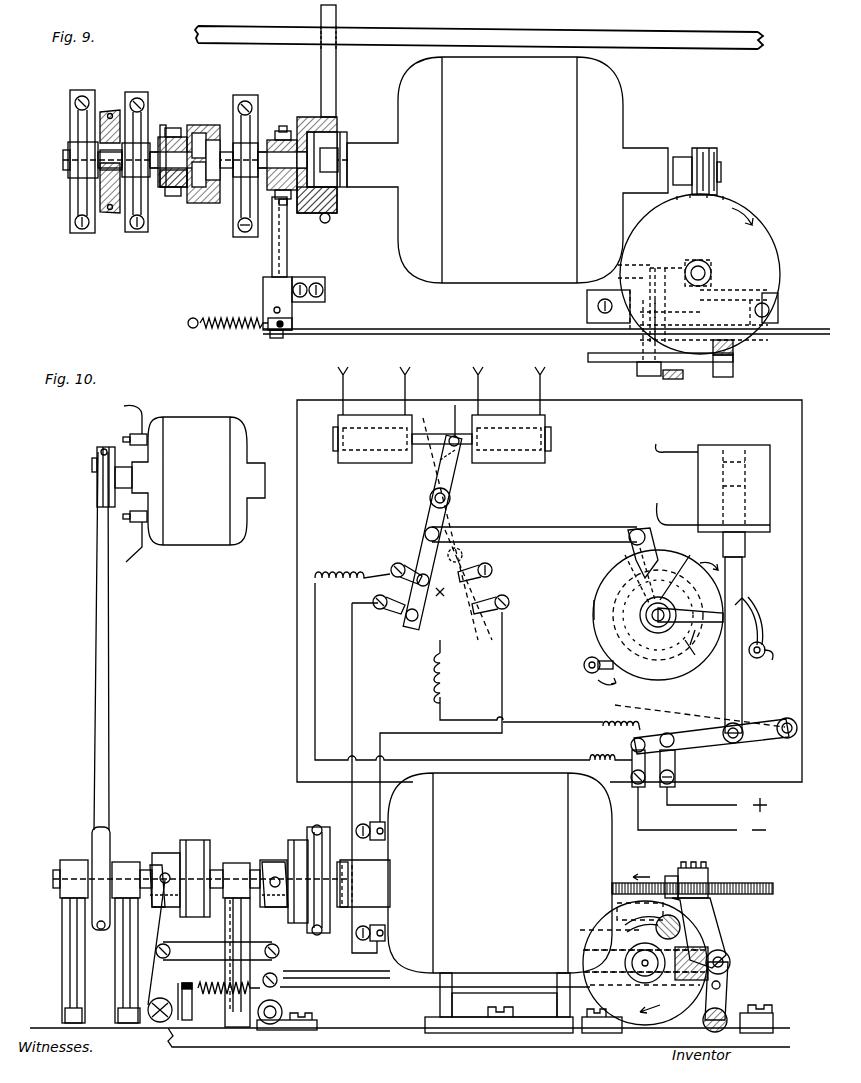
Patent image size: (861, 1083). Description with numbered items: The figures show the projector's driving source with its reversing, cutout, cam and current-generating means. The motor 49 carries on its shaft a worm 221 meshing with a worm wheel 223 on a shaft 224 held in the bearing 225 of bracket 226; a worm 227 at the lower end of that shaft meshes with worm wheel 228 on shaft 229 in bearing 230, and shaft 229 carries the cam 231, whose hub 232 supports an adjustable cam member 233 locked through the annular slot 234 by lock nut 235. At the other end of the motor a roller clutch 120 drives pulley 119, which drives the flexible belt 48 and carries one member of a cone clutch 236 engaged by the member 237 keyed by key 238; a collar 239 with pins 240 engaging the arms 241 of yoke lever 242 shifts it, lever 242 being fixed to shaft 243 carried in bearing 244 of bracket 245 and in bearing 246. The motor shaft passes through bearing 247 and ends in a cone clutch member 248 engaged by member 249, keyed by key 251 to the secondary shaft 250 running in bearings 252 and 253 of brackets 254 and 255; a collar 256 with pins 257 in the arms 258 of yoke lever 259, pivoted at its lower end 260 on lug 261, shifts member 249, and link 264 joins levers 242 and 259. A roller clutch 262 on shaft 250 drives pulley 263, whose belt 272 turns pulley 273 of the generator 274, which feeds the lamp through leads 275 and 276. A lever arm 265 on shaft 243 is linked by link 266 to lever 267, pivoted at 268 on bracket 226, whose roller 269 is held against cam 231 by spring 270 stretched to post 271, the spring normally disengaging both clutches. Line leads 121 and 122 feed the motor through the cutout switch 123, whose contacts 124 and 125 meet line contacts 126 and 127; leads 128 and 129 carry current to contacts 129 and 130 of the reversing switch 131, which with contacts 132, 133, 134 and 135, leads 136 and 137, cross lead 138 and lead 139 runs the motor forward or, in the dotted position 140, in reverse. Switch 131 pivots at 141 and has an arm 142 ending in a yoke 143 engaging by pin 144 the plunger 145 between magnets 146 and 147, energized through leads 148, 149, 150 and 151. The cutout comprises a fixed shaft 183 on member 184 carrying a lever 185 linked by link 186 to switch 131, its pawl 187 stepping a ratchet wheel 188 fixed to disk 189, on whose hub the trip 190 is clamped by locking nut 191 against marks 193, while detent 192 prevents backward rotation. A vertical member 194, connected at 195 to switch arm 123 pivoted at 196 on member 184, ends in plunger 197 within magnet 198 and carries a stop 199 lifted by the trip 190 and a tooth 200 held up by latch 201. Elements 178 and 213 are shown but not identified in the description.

In FIG. 9, the flexible belt 48 is at (324, 72).
In FIG. 10, the flexible belt 48 is at (318, 827).
In FIG. 9, the motor 49 is at (600, 100).
In FIG. 10, the motor 49 is at (460, 953).
In FIG. 9, the pulley 119 is at (340, 214).
In FIG. 10, the pulley 119 is at (312, 828).
In FIG. 9, the roller clutch 120 is at (326, 165).
In FIG. 10, the roller clutch 120 is at (359, 874).
In FIG. 10, the line lead 121 is at (722, 808).
In FIG. 10, the line lead 122 is at (722, 832).
In FIG. 10, the cutout switch 123 is at (690, 742).
In FIG. 10, the contact 124 is at (667, 733).
In FIG. 10, the contact 125 is at (630, 746).
In FIG. 10, the line contact 126 is at (672, 780).
In FIG. 10, the line contact 127 is at (632, 765).
In FIG. 10, the lead 128 is at (540, 722).
In FIG. 10, the lead 129 is at (408, 622).
In FIG. 10, the contact 130 is at (420, 574).
In FIG. 10, the reversing switch 131 is at (428, 514).
In FIG. 10, the contact 132 is at (390, 610).
In FIG. 10, the contact 133 is at (391, 566).
In FIG. 10, the contact 134 is at (493, 576).
In FIG. 10, the contact 135 is at (500, 612).
In FIG. 10, the lead 136 is at (352, 706).
In FIG. 10, the lead 137 is at (503, 680).
In FIG. 10, the cross lead 138 is at (466, 588).
In FIG. 10, the lead 139 is at (440, 598).
In FIG. 10, the dotted line position 140 is at (462, 557).
In FIG. 10, the pivot 141 is at (452, 500).
In FIG. 10, the upwardly extending arm 142 is at (460, 478).
In FIG. 10, the yoke 143 is at (452, 436).
In FIG. 10, the pin 144 is at (455, 405).
In FIG. 10, the plunger 145 is at (430, 430).
In FIG. 10, the magnet 146 is at (522, 460).
In FIG. 10, the magnet 147 is at (362, 455).
In FIG. 10, the lead 148 is at (531, 387).
In FIG. 10, the lead 149 is at (488, 387).
In FIG. 10, the lead 150 is at (356, 387).
In FIG. 10, the lead 151 is at (400, 385).
In FIG. 10, the wire 178 is at (658, 503).
In FIG. 10, the fixed shaft 183 is at (642, 618).
In FIG. 10, the plate member 184 is at (297, 636).
In FIG. 10, the lever 185 is at (648, 552).
In FIG. 10, the link 186 is at (525, 537).
In FIG. 10, the pawl 187 is at (618, 568).
In FIG. 10, the ratchet wheel 188 is at (622, 592).
In FIG. 10, the disk 189 is at (594, 610).
In FIG. 10, the trip member 190 is at (701, 642).
In FIG. 10, the locking nut 191 is at (650, 630).
In FIG. 10, the spring pressed detent 192 is at (606, 672).
In FIG. 10, the marks 193 is at (683, 580).
In FIG. 10, the vertically disposed member 194 is at (742, 695).
In FIG. 10, the flexible connection 195 is at (738, 742).
In FIG. 10, the pivot 196 is at (787, 718).
In FIG. 10, the plunger 197 is at (746, 548).
In FIG. 10, the magnet 198 is at (758, 500).
In FIG. 10, the stop 199 is at (742, 600).
In FIG. 10, the tooth 200 is at (757, 615).
In FIG. 10, the spring pressed latch 201 is at (765, 640).
In FIG. 10, the wire 213 is at (658, 443).
In FIG. 9, the worm 221 is at (706, 150).
In FIG. 10, the worm 221 is at (705, 863).
In FIG. 9, the worm wheel 223 is at (750, 218).
In FIG. 9, the shaft 224 is at (712, 273).
In FIG. 10, the shaft 224 is at (680, 865).
In FIG. 9, the bearing 225 is at (706, 260).
In FIG. 10, the bearing 225 is at (702, 912).
In FIG. 9, the bracket 226 is at (736, 300).
In FIG. 10, the bracket 226 is at (710, 950).
In FIG. 10, the worm 227 is at (663, 1003).
In FIG. 9, the worm wheel 228 is at (665, 265).
In FIG. 10, the worm wheel 228 is at (600, 950).
In FIG. 9, the shaft 229 is at (648, 270).
In FIG. 10, the shaft 229 is at (615, 968).
In FIG. 9, the bearing 230 is at (632, 334).
In FIG. 10, the bearing 230 is at (641, 956).
In FIG. 9, the cam 231 is at (588, 357).
In FIG. 10, the cam 231 is at (605, 920).
In FIG. 9, the hub 232 is at (641, 376).
In FIG. 10, the hub 232 is at (643, 975).
In FIG. 10, the adjustable cam member 233 is at (610, 932).
In FIG. 10, the annular slot 234 is at (632, 920).
In FIG. 9, the lock nut 235 is at (682, 378).
In FIG. 10, the lock nut 235 is at (682, 928).
In FIG. 9, the cone clutch member 236 is at (316, 216).
In FIG. 9, the clutch member 237 is at (301, 124).
In FIG. 10, the clutch member 237 is at (296, 925).
In FIG. 9, the key 238 is at (247, 160).
In FIG. 9, the collar 239 is at (268, 190).
In FIG. 10, the collar 239 is at (277, 860).
In FIG. 9, the pins 240 is at (285, 129).
In FIG. 10, the pins 240 is at (268, 862).
In FIG. 9, the arms 241 is at (280, 128).
In FIG. 10, the arms 241 is at (270, 878).
In FIG. 10, the yoke lever 242 is at (290, 972).
In FIG. 9, the shaft 243 is at (272, 266).
In FIG. 10, the shaft 243 is at (283, 1012).
In FIG. 10, the bearing 244 is at (245, 1012).
In FIG. 9, the bracket 245 is at (243, 95).
In FIG. 10, the bracket 245 is at (230, 932).
In FIG. 9, the bearing 246 is at (265, 297).
In FIG. 10, the bearing 246 is at (295, 1032).
In FIG. 9, the bearing 247 is at (237, 140).
In FIG. 10, the bearing 247 is at (230, 862).
In FIG. 9, the cone clutch member 248 is at (210, 205).
In FIG. 10, the cone clutch member 248 is at (196, 842).
In FIG. 9, the clutch member 249 is at (190, 206).
In FIG. 10, the clutch member 249 is at (185, 840).
In FIG. 9, the secondary shaft 250 is at (65, 160).
In FIG. 10, the secondary shaft 250 is at (55, 879).
In FIG. 9, the key 251 is at (185, 162).
In FIG. 9, the bearing 252 is at (147, 143).
In FIG. 10, the bearing 252 is at (126, 860).
In FIG. 9, the bearing 253 is at (72, 148).
In FIG. 10, the bearing 253 is at (72, 858).
In FIG. 9, the bracket 254 is at (138, 92).
In FIG. 10, the bracket 254 is at (122, 968).
In FIG. 9, the bracket 255 is at (78, 92).
In FIG. 10, the bracket 255 is at (62, 960).
In FIG. 9, the collar 256 is at (165, 187).
In FIG. 10, the collar 256 is at (165, 870).
In FIG. 9, the pins 257 is at (172, 130).
In FIG. 10, the pins 257 is at (171, 879).
In FIG. 9, the arms 258 is at (168, 137).
In FIG. 10, the arms 258 is at (158, 865).
In FIG. 10, the yoke lever 259 is at (150, 985).
In FIG. 10, the lower end pivot 260 is at (170, 1020).
In FIG. 10, the lug 261 is at (125, 1010).
In FIG. 9, the roller clutch 262 is at (105, 160).
In FIG. 9, the pulley 263 is at (100, 212).
In FIG. 10, the pulley 263 is at (92, 914).
In FIG. 10, the link 264 is at (212, 952).
In FIG. 9, the lever arm 265 is at (294, 326).
In FIG. 10, the lever arm 265 is at (280, 990).
In FIG. 9, the link 266 is at (432, 331).
In FIG. 10, the link 266 is at (385, 989).
In FIG. 10, the lever 267 is at (728, 995).
In FIG. 9, the pivot 268 is at (733, 349).
In FIG. 10, the pivot 268 is at (728, 1017).
In FIG. 9, the roller 269 is at (733, 368).
In FIG. 10, the roller 269 is at (730, 964).
In FIG. 9, the spring 270 is at (232, 332).
In FIG. 10, the spring 270 is at (220, 990).
In FIG. 9, the post 271 is at (190, 321).
In FIG. 10, the post 271 is at (190, 1020).
In FIG. 9, the belt 272 is at (110, 112).
In FIG. 10, the belt 272 is at (96, 706).
In FIG. 10, the pulley 273 is at (96, 496).
In FIG. 10, the generator 274 is at (200, 545).
In FIG. 10, the lead 275 is at (128, 562).
In FIG. 10, the lead 276 is at (142, 412).